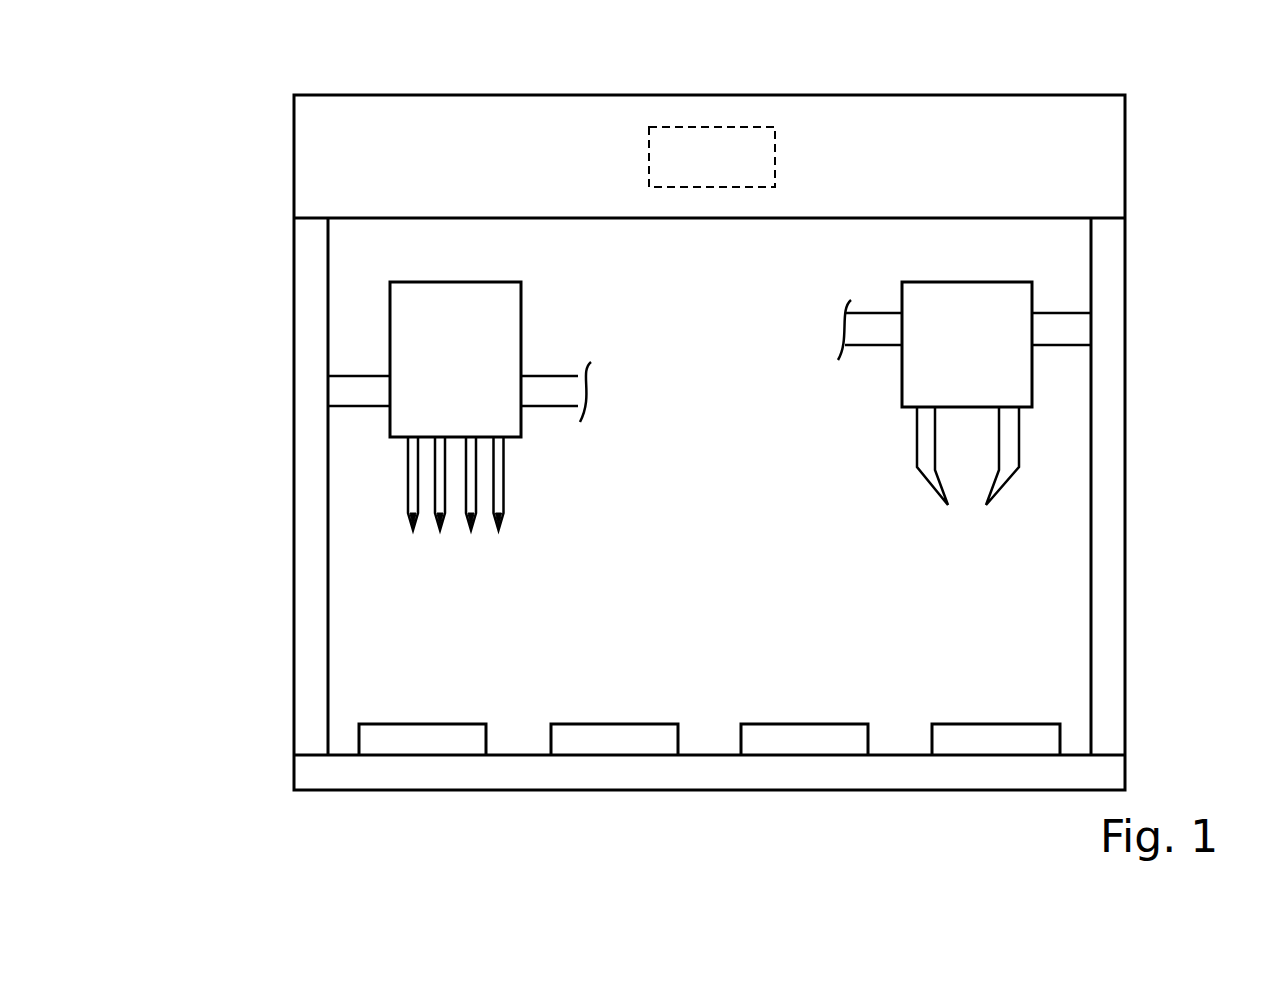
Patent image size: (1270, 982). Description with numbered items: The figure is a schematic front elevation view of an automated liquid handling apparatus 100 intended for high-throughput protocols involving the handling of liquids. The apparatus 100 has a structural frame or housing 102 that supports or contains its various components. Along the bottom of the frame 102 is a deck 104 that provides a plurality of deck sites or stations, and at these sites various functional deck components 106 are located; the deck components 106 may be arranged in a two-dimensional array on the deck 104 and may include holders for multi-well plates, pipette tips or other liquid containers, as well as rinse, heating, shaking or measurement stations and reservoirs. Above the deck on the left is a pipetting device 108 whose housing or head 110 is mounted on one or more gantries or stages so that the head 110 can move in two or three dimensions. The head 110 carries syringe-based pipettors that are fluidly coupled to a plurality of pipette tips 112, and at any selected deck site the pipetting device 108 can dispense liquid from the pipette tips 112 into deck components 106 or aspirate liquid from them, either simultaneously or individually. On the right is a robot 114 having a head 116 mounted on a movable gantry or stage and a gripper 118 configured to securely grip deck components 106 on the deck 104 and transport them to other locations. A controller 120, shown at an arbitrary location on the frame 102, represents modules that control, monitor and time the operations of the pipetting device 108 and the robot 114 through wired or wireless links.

The automated liquid handling apparatus 100 is at (195, 140).
The structural frame or housing 102 is at (1125, 596).
The deck 104 is at (708, 790).
The deck components 106 is at (795, 724).
The pipetting device 108 is at (408, 397).
The head 110 is at (521, 310).
The pipette tips 112 is at (505, 483).
The robot 114 is at (995, 393).
The head 116 is at (902, 380).
The gripper 118 is at (1020, 460).
The controller 120 is at (732, 127).